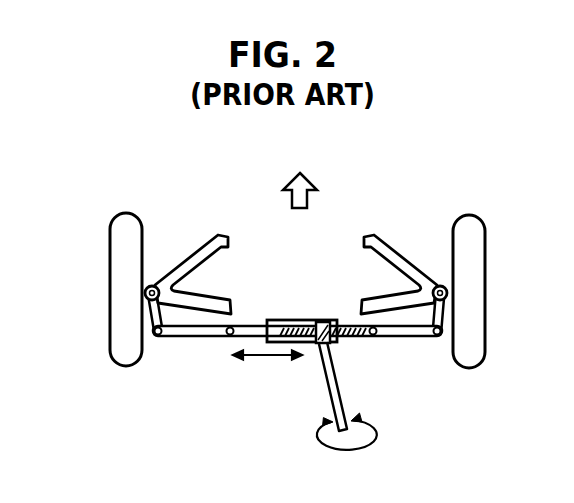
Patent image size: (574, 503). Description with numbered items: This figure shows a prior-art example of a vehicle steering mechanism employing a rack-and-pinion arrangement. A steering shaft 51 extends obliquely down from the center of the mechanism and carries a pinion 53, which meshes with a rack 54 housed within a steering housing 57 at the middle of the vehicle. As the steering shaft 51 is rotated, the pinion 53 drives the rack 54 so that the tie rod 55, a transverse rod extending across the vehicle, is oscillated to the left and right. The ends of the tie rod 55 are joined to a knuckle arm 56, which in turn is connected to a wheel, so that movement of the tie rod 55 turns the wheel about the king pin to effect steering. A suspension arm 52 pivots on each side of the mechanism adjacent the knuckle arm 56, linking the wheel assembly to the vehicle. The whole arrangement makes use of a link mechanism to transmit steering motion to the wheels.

The steering shaft 51 is at (347, 430).
The suspension arm 52 is at (195, 245).
The pinion 53 is at (335, 340).
The rack 54 is at (316, 344).
The tie rod 55 is at (195, 337).
The knuckle arm 56 is at (146, 316).
The steering housing 57 is at (300, 320).